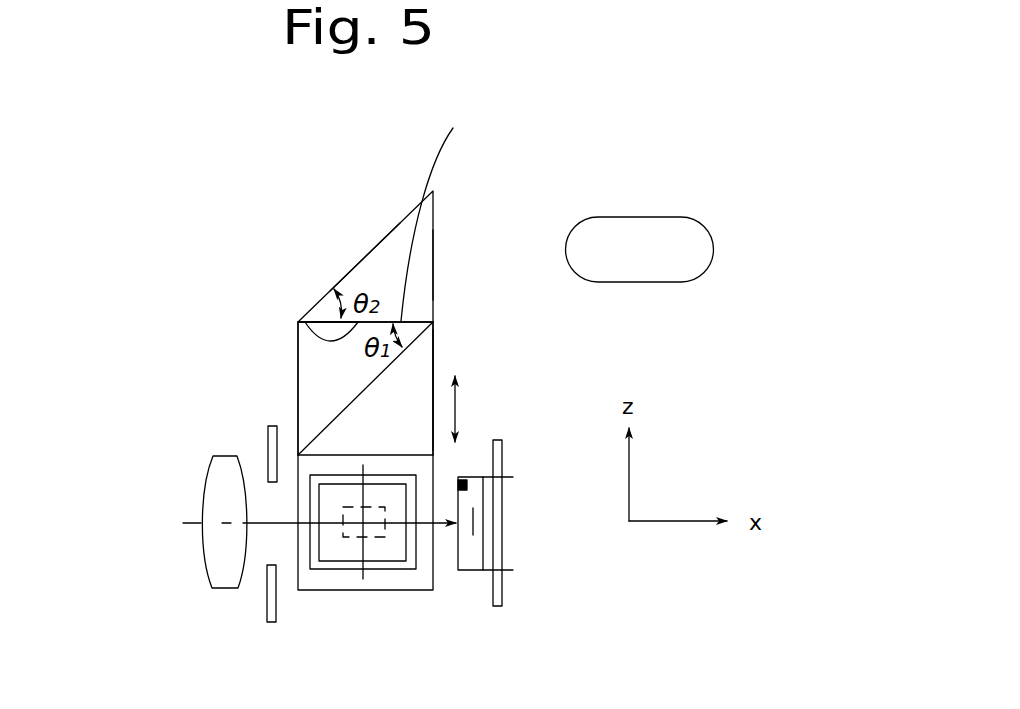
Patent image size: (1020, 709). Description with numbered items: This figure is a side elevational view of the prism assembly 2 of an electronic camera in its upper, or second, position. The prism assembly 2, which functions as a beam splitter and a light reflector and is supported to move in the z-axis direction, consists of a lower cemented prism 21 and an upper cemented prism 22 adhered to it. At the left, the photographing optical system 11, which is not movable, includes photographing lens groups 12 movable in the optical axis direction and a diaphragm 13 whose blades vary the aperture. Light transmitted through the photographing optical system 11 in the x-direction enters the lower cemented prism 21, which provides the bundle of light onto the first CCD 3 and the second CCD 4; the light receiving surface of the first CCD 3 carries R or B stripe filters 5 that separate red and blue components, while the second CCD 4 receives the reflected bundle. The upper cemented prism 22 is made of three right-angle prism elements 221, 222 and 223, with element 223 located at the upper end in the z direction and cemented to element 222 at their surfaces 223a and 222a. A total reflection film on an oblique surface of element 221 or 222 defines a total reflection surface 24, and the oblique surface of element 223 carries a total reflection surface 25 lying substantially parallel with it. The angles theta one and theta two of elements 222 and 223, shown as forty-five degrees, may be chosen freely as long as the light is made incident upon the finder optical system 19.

The prism assembly 2 is at (356, 244).
The total reflection surface 25 is at (405, 218).
The surface 223a is at (450, 209).
The surface 222a is at (303, 321).
The right-angle prism element 222 is at (296, 337).
The right-angle prism element 223 is at (428, 262).
The right-angle prism element 221 is at (434, 357).
The upper cemented prism 22 is at (437, 366).
The total reflection surface 24 is at (398, 378).
The lower cemented prism 21 is at (441, 577).
The first CCD 3 is at (466, 480).
The R or B stripe filter 5 is at (460, 503).
The second CCD 4 is at (387, 545).
The photographing optical system 11 is at (246, 599).
The photographing lens groups 12 is at (218, 483).
The diaphragm 13 is at (275, 425).
The finder optical system 19 is at (662, 236).